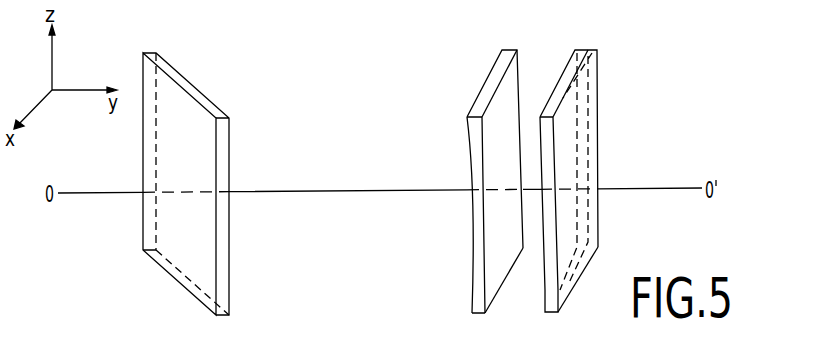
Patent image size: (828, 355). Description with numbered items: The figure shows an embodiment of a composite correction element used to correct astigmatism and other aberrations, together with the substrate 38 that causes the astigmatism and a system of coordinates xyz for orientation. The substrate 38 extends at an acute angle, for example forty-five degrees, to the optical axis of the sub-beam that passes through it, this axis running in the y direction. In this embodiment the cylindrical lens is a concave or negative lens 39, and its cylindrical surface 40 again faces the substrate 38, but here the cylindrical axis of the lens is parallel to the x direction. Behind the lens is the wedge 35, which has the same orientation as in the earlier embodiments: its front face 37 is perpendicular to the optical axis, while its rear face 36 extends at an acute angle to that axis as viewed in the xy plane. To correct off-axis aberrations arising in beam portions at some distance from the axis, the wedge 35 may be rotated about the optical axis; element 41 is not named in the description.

The wedge 35 is at (582, 49).
The rear face 36 is at (600, 145).
The front face 37 is at (545, 297).
The substrate 38 is at (180, 73).
The concave or negative lens 39 is at (508, 48).
The cylindrical surface 40 is at (478, 145).
The lens bottom edge 41 is at (492, 292).